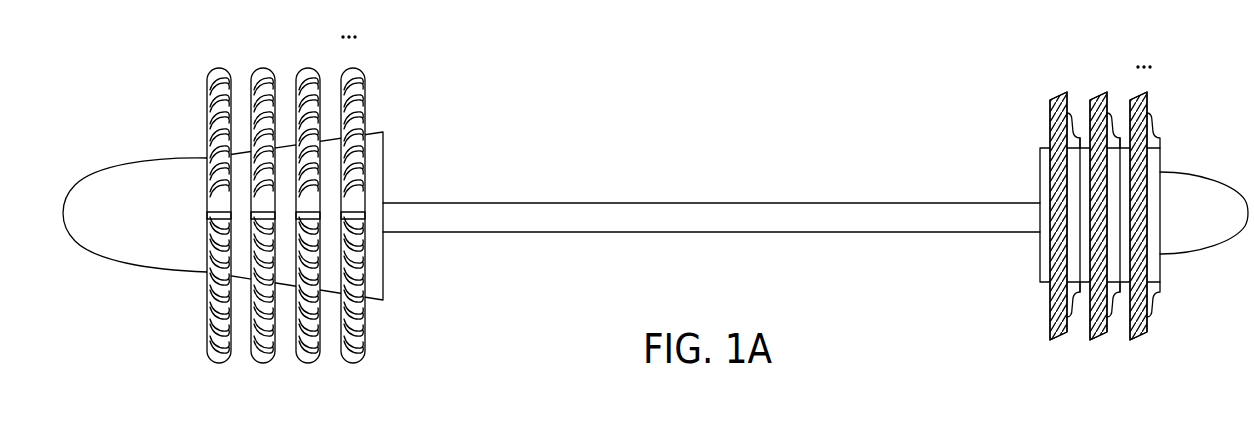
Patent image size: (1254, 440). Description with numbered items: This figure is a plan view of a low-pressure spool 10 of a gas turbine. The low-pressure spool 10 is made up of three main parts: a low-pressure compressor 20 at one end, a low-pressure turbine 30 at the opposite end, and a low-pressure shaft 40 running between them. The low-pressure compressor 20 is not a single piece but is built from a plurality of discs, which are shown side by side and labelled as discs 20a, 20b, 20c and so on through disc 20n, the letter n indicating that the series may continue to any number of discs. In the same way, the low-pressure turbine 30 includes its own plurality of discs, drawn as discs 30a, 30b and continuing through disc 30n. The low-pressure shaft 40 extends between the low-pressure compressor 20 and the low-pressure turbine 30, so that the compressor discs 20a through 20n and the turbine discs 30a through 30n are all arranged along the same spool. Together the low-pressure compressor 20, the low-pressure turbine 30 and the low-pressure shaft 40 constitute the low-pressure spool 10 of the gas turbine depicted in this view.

The low-pressure spool 10 is at (655, 216).
The low-pressure compressor 20 is at (301, 216).
The disc 20a is at (217, 66).
The disc 20b is at (263, 66).
The disc 20c is at (306, 66).
The disc 20n is at (355, 66).
The low-pressure turbine 30 is at (1122, 218).
The disc 30a is at (1053, 98).
The disc 30b is at (1094, 98).
The disc 30n is at (1136, 97).
The low-pressure shaft 40 is at (680, 203).